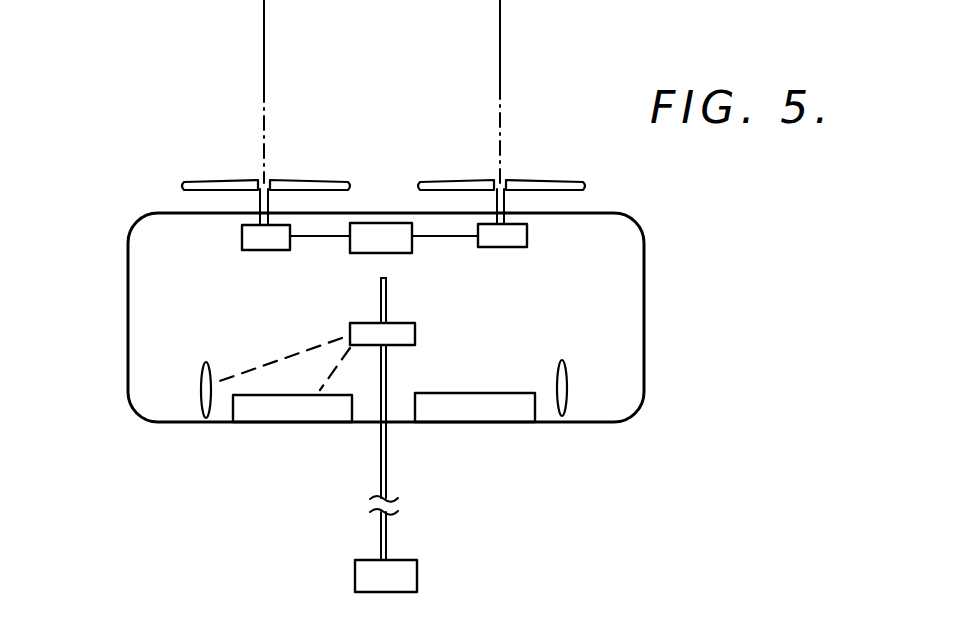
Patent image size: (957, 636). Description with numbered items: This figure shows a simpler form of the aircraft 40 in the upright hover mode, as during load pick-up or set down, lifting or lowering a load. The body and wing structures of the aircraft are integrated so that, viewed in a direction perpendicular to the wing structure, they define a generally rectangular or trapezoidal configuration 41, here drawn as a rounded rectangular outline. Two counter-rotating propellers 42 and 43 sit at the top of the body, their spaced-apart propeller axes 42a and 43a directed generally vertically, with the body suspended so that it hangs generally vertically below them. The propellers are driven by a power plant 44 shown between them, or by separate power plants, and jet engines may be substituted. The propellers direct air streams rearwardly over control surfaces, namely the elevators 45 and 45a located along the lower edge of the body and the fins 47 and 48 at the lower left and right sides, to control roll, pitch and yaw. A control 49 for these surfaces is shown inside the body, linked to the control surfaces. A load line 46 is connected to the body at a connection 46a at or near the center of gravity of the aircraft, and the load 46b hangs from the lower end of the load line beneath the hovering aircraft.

The aircraft 40 is at (658, 281).
The integrated body and wing structure configuration 41 is at (155, 285).
The counter-rotating propeller 42 is at (217, 180).
The propeller axis 42a is at (264, 40).
The counter-rotating propeller 43 is at (556, 180).
The propeller axis 43a is at (500, 18).
The power plant 44 is at (383, 230).
The elevator 45 is at (265, 408).
The elevator 45a is at (518, 407).
The load line 46 is at (387, 470).
The load line connection 46a is at (376, 280).
The load 46b is at (355, 573).
The fin 47 is at (201, 388).
The fin 48 is at (567, 383).
The control 49 is at (416, 333).